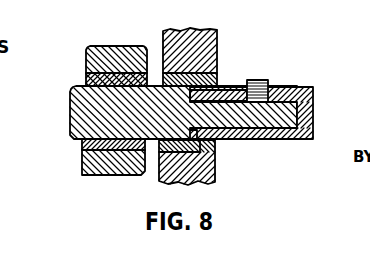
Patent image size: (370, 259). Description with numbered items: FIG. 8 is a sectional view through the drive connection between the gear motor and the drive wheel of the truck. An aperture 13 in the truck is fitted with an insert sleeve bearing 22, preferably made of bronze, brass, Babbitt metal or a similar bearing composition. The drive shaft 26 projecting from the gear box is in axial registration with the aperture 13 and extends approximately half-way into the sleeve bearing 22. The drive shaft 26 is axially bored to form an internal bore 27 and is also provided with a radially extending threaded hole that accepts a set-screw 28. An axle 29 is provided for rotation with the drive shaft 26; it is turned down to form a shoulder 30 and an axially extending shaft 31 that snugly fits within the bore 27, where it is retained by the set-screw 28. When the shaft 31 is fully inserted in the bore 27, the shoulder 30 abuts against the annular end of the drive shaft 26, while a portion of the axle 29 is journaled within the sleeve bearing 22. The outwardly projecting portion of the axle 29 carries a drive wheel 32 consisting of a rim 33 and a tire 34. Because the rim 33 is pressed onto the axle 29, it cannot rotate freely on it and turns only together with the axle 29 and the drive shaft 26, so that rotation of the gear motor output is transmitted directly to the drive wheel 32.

The aperture 13 is at (217, 141).
The insert sleeve bearing 22 is at (213, 75).
The drive shaft 26 is at (276, 128).
The internal bore 27 is at (273, 90).
The set-screw 28 is at (255, 82).
The axle 29 is at (71, 107).
The shoulder 30 is at (216, 155).
The axially extending shaft 31 is at (301, 109).
The drive wheel 32 is at (80, 69).
The rim 33 is at (87, 147).
The tire 34 is at (87, 168).